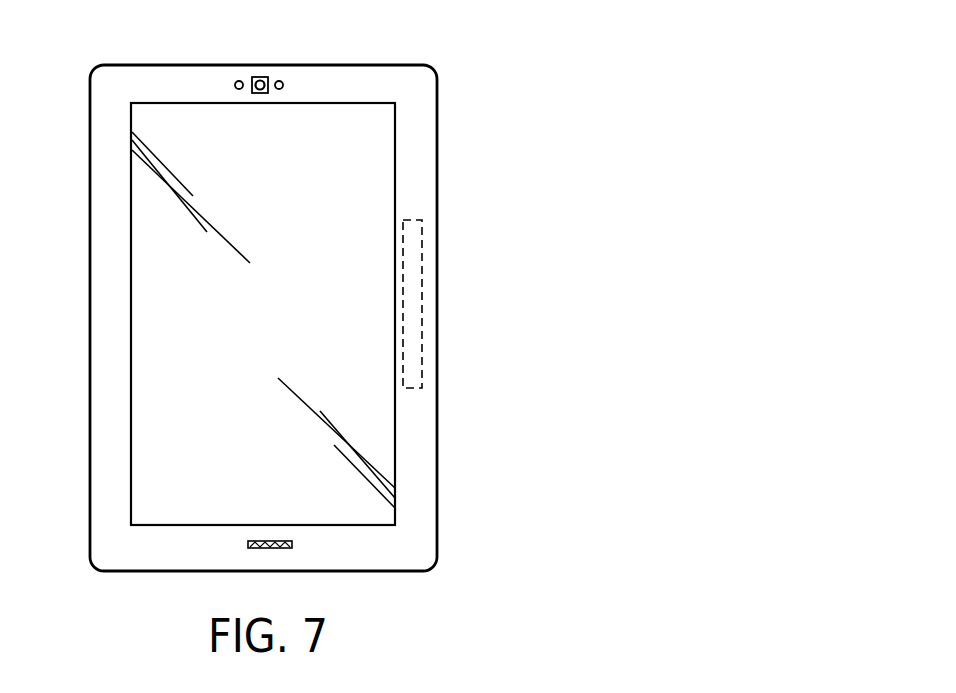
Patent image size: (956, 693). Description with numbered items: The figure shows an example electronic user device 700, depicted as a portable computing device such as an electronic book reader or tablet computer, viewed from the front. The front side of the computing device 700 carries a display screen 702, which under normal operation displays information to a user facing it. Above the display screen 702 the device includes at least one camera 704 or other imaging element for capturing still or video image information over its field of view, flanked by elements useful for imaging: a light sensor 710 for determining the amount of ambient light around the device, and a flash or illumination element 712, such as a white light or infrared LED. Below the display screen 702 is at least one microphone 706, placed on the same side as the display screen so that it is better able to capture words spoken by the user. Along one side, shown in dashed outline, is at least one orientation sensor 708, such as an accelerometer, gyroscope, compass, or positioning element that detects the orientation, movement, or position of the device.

The electronic user device 700 is at (587, 121).
The display screen 702 is at (130, 113).
The camera 704 is at (258, 76).
The microphone 706 is at (278, 550).
The orientation sensor 708 is at (423, 333).
The light sensor 710 is at (236, 81).
The flash or illumination element 712 is at (281, 81).